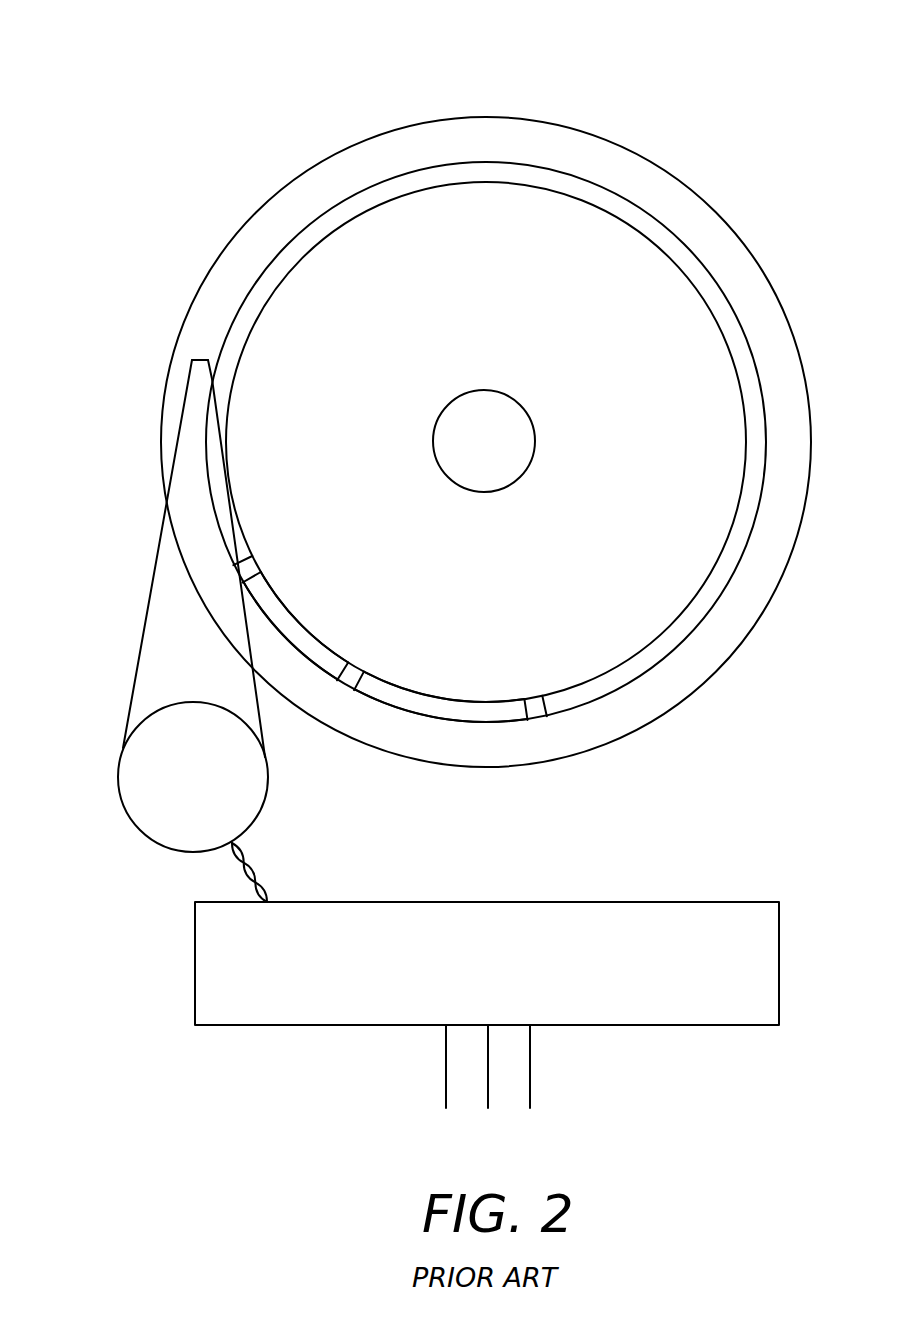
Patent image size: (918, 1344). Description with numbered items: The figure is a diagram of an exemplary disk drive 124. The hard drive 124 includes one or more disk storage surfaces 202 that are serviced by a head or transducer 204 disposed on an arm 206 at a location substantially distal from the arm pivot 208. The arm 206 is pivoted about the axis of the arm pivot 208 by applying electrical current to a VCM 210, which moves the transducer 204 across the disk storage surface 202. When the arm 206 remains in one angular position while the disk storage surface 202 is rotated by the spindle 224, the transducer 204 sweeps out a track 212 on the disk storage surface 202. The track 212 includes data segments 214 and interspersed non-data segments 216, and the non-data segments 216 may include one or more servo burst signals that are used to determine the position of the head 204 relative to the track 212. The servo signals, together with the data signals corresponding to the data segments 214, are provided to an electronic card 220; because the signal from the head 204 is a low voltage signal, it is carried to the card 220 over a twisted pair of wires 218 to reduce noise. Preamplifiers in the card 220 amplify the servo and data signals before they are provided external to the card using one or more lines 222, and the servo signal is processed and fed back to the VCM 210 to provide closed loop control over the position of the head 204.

The disk drive 124 is at (468, 55).
The disk storage surface 202 is at (575, 128).
The track 212 is at (622, 196).
The spindle 224 is at (510, 392).
The non-data segments 216 is at (248, 558).
The data segments 214 is at (302, 638).
The arm 206 is at (155, 573).
The transducer 204 is at (192, 361).
The arm pivot 208 is at (193, 775).
The VCM 210 is at (245, 777).
The twisted pair of wires 218 is at (267, 880).
The card 220 is at (528, 902).
The lines 222 is at (570, 1066).